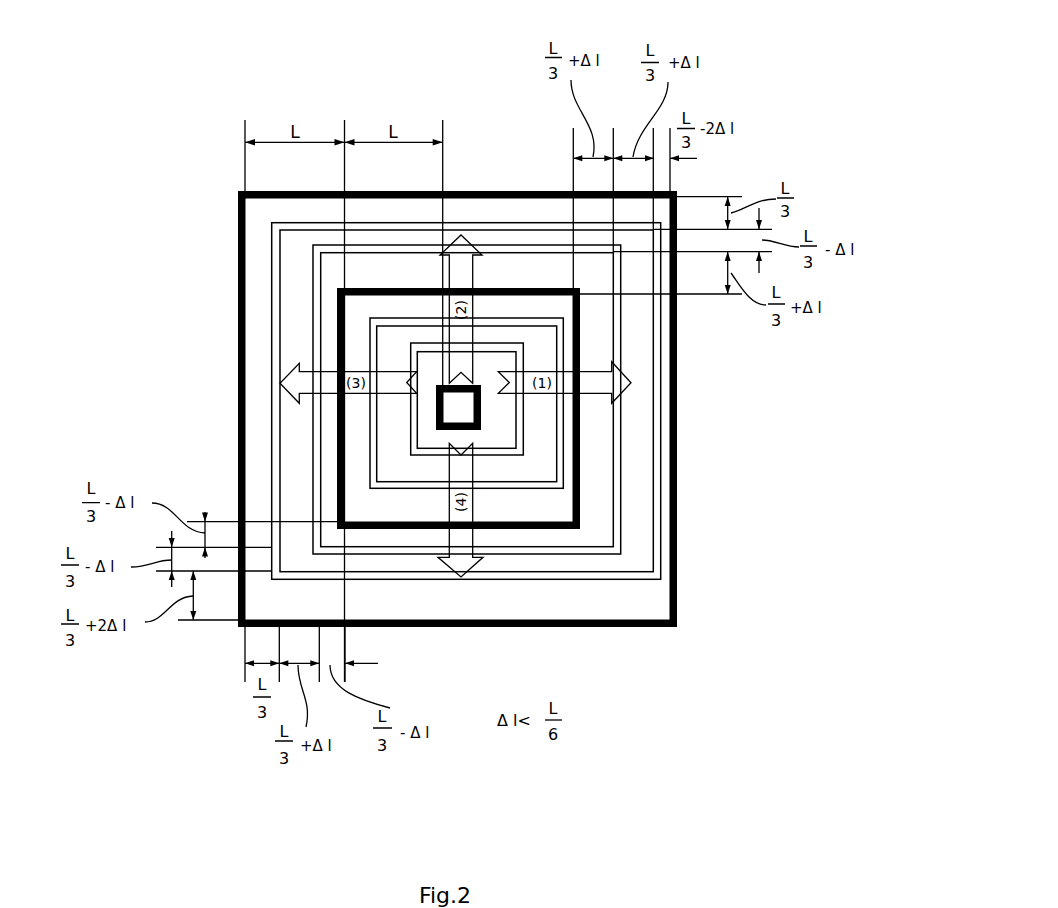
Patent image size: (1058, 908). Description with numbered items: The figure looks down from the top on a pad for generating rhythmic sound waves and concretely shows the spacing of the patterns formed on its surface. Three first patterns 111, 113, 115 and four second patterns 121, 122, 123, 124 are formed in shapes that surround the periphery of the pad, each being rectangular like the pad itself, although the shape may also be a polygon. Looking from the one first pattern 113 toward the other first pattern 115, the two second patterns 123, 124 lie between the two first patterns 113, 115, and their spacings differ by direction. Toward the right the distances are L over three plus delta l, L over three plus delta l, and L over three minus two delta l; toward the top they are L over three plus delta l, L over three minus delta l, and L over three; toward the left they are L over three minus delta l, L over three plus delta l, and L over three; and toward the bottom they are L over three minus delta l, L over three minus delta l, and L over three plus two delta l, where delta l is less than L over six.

The first pattern 111 is at (437, 408).
The first pattern 113 is at (575, 467).
The first pattern 115 is at (503, 192).
The second pattern 121 is at (495, 452).
The second pattern 122 is at (545, 487).
The second pattern 123 is at (617, 418).
The second pattern 124 is at (660, 367).